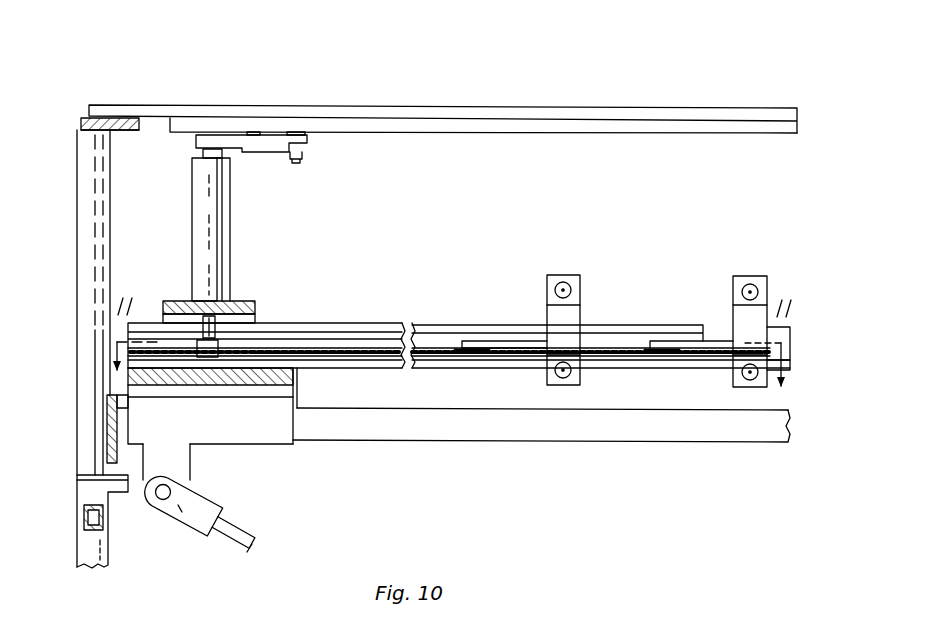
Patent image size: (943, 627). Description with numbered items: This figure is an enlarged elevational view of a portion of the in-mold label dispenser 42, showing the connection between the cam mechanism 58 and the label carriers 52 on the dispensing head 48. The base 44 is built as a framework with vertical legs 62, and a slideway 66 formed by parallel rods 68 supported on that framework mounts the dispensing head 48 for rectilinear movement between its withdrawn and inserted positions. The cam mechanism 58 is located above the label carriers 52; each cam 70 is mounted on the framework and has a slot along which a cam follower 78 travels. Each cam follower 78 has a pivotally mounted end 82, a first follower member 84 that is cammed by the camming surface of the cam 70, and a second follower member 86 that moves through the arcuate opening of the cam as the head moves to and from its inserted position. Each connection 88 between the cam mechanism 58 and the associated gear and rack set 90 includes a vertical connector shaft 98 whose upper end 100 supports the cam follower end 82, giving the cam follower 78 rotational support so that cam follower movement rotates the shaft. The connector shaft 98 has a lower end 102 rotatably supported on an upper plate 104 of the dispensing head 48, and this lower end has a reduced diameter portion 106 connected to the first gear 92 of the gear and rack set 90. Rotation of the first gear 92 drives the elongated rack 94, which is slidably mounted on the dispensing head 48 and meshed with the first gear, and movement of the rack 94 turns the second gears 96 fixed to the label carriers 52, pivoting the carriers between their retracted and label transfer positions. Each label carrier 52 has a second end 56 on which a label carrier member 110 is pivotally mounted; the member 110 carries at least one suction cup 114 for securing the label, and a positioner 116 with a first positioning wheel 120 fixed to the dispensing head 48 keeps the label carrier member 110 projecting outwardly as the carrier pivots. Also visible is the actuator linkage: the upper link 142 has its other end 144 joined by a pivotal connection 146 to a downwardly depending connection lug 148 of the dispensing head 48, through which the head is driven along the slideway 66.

The in-mold label dispenser 42 is at (620, 78).
The base 44 is at (76, 540).
The dispensing head 48 is at (435, 322).
The label carrier 52 is at (510, 340).
The second label carrier end 56 is at (535, 346).
The cam mechanism 58 is at (180, 146).
The vertical leg 62 is at (88, 366).
The slideway 66 is at (634, 434).
The parallel rod 68 is at (412, 432).
The cam 70 is at (450, 106).
The cam follower 78 is at (236, 126).
The pivotally mounted end 82 is at (210, 137).
The first follower member 84 is at (299, 133).
The second follower member 86 is at (259, 132).
The connection 88 is at (188, 221).
The gear and rack set 90 is at (286, 382).
The first gear 92 is at (206, 354).
The rack 94 is at (345, 357).
The second gear 96 is at (462, 356).
The connector shaft 98 is at (217, 205).
The upper end 100 is at (222, 155).
The lower end 102 is at (213, 293).
The upper plate 104 is at (164, 310).
The reduced diameter portion 106 is at (217, 322).
The label carrier member 110 is at (584, 300).
The suction cup 114 is at (563, 370).
The positioner 116 is at (466, 346).
The first positioning wheel 120 is at (455, 358).
The upper link 142 is at (258, 526).
The other end 144 is at (200, 527).
The pivotal connection 146 is at (166, 504).
The connection lug 148 is at (145, 476).